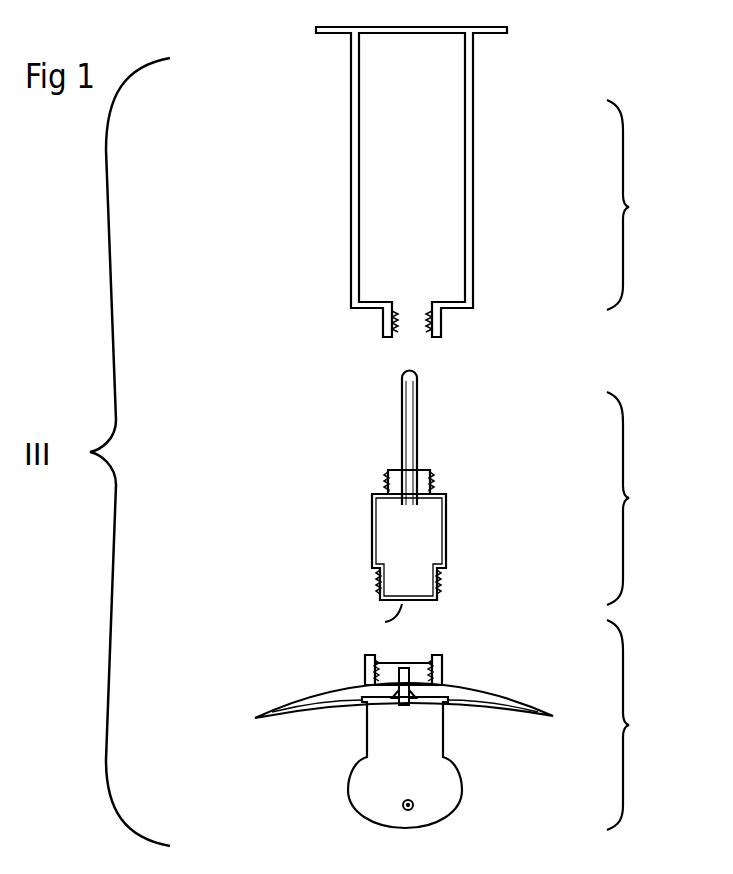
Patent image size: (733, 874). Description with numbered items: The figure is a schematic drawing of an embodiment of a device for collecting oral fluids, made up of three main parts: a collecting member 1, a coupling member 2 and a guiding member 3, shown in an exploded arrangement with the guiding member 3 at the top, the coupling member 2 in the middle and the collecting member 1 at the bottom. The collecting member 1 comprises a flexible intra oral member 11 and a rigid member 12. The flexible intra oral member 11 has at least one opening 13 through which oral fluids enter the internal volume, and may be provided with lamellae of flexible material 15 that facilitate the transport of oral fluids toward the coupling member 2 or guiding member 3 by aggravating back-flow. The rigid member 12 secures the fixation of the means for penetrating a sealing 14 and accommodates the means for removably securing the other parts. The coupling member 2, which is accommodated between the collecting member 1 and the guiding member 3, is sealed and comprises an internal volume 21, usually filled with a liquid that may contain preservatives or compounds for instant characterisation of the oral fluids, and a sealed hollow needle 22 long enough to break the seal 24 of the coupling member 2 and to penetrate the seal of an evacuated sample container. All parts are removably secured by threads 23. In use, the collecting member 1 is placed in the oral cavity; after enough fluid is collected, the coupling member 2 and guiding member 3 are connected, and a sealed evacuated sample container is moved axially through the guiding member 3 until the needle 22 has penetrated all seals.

The collecting member 1 is at (469, 725).
The coupling member 2 is at (472, 491).
The guiding member 3 is at (480, 191).
The flexible intra oral member 11 is at (455, 745).
The rigid member 12 is at (500, 682).
The opening 13 is at (430, 805).
The means for penetrating a sealing 14 is at (412, 669).
The lamellae of flexible material 15 is at (382, 660).
The internal volume 21 is at (410, 547).
The hollow needle 22 is at (422, 426).
The threads 23 is at (376, 476).
The seal of the coupling member 24 is at (385, 620).